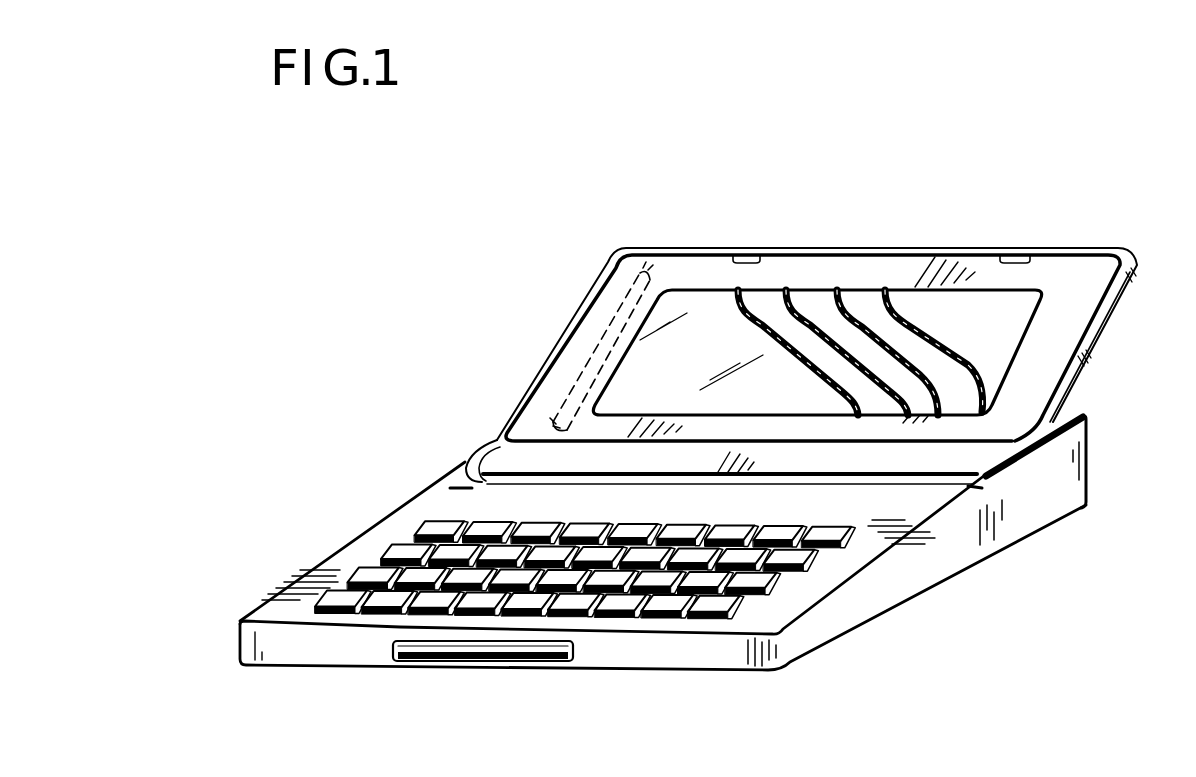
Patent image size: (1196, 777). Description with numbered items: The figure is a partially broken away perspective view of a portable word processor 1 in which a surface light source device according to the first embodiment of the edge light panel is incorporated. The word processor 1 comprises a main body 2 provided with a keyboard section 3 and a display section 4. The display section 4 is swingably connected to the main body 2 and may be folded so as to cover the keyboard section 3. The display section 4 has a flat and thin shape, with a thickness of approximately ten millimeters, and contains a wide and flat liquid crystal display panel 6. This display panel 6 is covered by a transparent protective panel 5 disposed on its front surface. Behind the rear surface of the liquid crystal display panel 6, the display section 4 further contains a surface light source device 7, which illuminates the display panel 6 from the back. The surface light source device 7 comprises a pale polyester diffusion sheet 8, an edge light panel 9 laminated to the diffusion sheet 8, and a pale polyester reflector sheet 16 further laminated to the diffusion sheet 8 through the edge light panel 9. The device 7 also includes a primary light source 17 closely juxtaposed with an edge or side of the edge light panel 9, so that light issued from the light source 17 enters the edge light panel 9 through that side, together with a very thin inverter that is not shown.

The portable word processor 1 is at (1018, 560).
The main body 2 is at (867, 610).
The keyboard section 3 is at (407, 553).
The display section 4 is at (1078, 327).
The transparent protective panel 5 is at (682, 300).
The liquid crystal display panel 6 is at (760, 300).
The surface light source device 7 is at (935, 173).
The diffusion sheet 8 is at (817, 298).
The edge light panel 9 is at (865, 298).
The reflector sheet 16 is at (913, 297).
The primary light source 17 is at (583, 357).